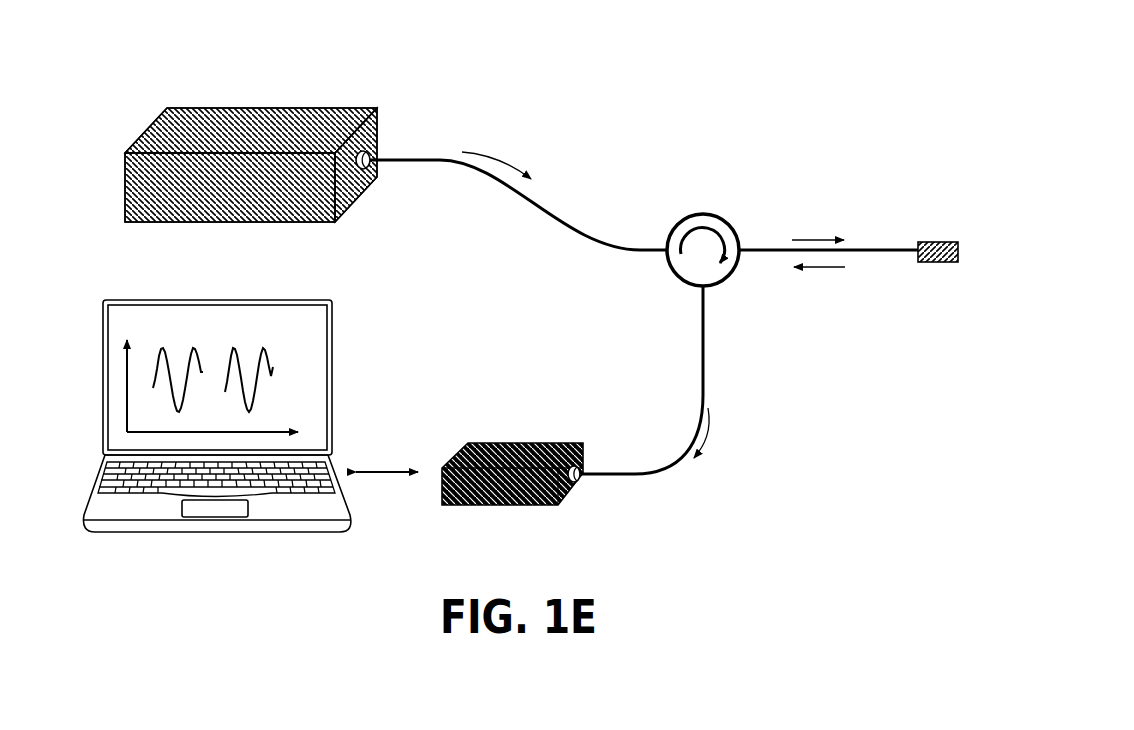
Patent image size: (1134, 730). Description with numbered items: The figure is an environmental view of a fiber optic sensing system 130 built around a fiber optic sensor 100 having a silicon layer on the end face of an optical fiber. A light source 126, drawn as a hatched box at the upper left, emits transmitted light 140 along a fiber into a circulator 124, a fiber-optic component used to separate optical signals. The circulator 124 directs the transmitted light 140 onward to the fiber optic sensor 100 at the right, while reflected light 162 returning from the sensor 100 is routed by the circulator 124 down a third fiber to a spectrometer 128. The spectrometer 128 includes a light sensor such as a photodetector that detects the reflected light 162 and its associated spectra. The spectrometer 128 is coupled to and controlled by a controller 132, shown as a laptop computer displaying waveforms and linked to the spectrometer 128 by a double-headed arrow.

The fiber optic sensor 100 is at (923, 242).
The circulator 124 is at (730, 273).
The light source 126 is at (347, 108).
The spectrometer 128 is at (515, 443).
The fiber optic sensing system 130 is at (740, 75).
The controller 132 is at (330, 327).
The transmitted light 140 is at (653, 186).
The reflected light 162 is at (769, 362).